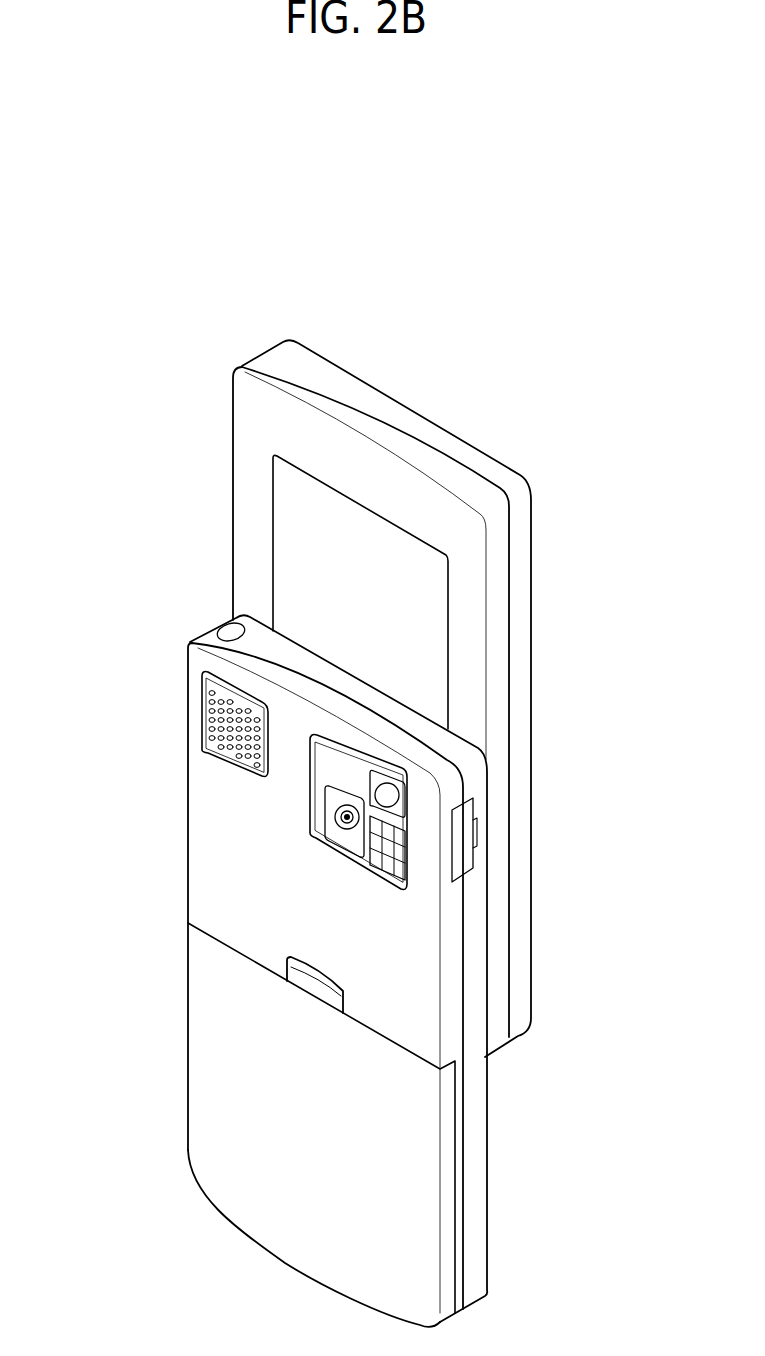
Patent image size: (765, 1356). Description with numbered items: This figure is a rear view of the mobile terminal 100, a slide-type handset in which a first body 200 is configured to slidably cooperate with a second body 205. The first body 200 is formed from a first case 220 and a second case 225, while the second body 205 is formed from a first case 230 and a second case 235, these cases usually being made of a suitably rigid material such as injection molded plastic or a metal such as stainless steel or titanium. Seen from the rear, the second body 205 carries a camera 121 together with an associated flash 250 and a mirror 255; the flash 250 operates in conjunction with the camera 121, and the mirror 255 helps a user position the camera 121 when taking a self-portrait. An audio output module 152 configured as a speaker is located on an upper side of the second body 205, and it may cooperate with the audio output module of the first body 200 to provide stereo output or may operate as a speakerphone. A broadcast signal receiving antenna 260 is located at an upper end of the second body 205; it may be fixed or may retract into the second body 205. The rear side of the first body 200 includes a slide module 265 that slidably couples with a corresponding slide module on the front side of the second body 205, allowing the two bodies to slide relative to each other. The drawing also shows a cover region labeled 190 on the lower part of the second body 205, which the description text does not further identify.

The mobile terminal 100 is at (514, 374).
The first body 200 is at (190, 494).
The second body 205 is at (158, 823).
The first case 220 is at (278, 352).
The second case 225 is at (260, 368).
The slide module 265 is at (272, 573).
The broadcast signal receiving antenna 260 is at (225, 628).
The audio output module 152 is at (217, 717).
The camera 121 is at (347, 827).
The mirror 255 is at (384, 794).
The flash 250 is at (385, 853).
The second case 235 is at (450, 1022).
The first case 230 is at (478, 1085).
The battery 190 is at (203, 1020).